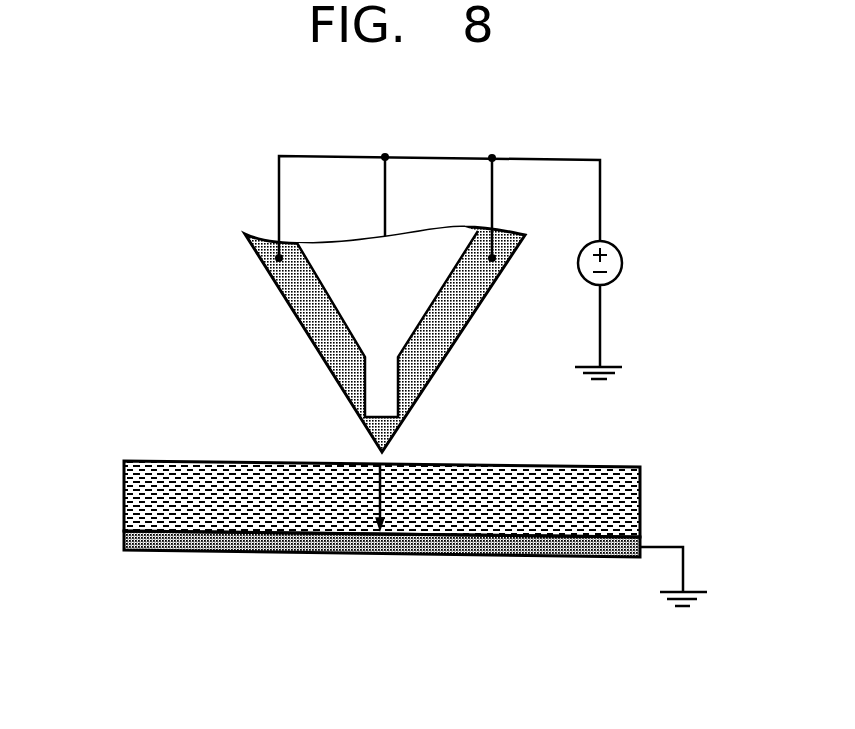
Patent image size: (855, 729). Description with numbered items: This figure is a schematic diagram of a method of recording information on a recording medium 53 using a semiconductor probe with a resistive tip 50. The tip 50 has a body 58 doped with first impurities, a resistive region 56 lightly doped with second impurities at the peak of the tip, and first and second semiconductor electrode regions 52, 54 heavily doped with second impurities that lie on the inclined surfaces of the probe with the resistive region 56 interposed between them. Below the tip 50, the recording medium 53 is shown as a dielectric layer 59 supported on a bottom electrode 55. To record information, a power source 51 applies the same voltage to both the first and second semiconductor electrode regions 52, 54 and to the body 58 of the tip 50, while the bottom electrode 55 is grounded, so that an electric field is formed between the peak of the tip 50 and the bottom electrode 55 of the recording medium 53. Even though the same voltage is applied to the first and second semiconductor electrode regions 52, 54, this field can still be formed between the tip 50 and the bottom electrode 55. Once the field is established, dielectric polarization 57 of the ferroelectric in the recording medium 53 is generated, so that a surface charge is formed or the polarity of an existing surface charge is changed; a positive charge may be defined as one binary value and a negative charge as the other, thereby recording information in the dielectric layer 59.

The tip 50 is at (366, 302).
The power source 51 is at (617, 250).
The first semiconductor electrode region 52 is at (297, 311).
The recording medium 53 is at (371, 527).
The second semiconductor electrode region 54 is at (473, 313).
The bottom electrode 55 is at (554, 557).
The resistive region 56 is at (367, 438).
The dielectric polarization 57 is at (383, 497).
The body 58 is at (345, 252).
The dielectric layer 59 is at (640, 503).